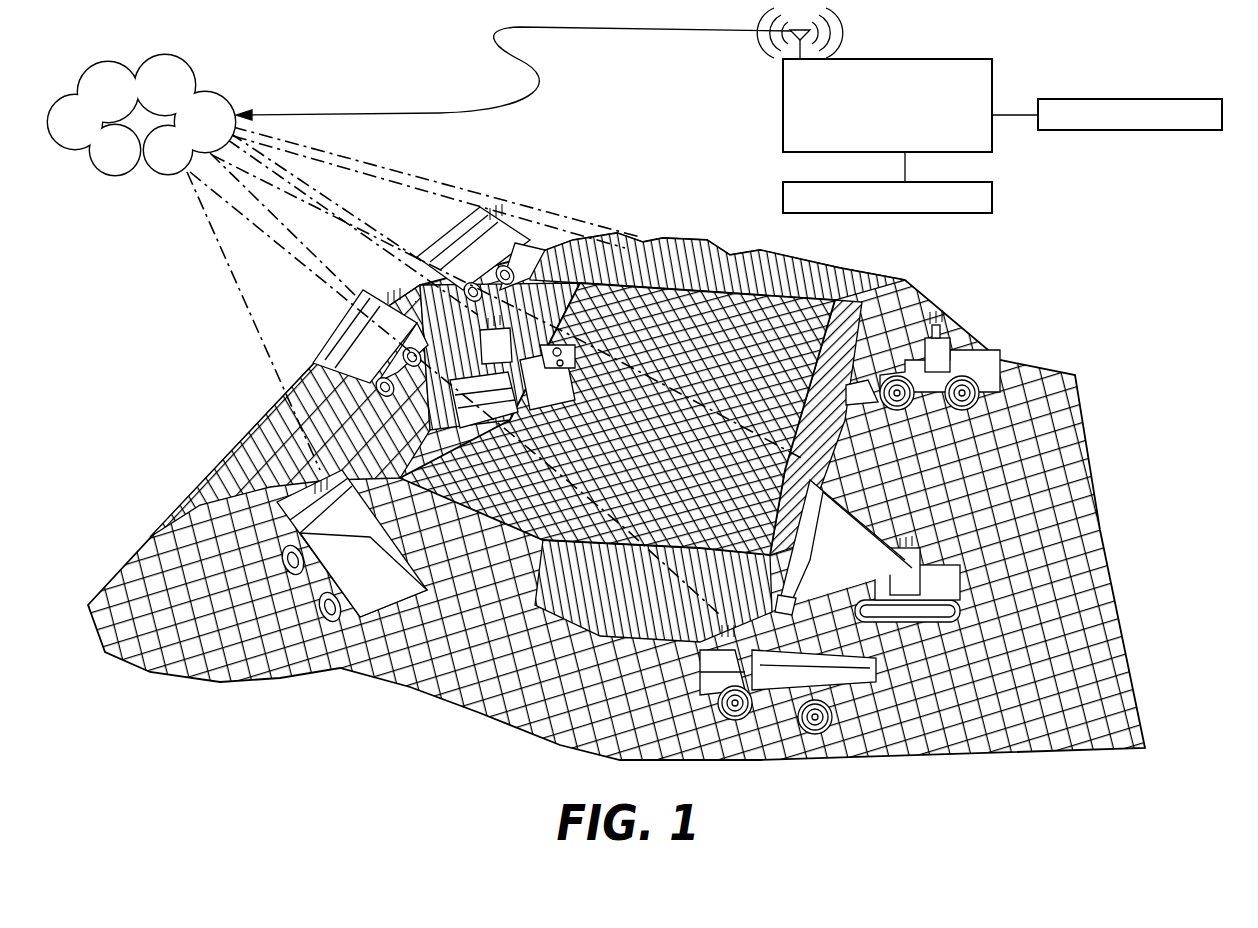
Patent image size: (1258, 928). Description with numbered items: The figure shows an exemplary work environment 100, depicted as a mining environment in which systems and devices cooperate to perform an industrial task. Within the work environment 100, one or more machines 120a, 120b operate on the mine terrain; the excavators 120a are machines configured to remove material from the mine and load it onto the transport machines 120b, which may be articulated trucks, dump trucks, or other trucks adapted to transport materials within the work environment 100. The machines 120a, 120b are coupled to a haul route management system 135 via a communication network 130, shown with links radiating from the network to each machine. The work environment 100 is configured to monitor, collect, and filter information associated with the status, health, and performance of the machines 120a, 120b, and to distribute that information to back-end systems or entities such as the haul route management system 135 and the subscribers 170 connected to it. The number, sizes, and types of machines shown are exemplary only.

The work environment 100 is at (872, 258).
The excavator 120a is at (546, 295).
The transport machine 120b is at (462, 255).
The communication network 130 is at (213, 83).
The haul route management system 135 is at (992, 66).
The subscriber 170 is at (1115, 99).